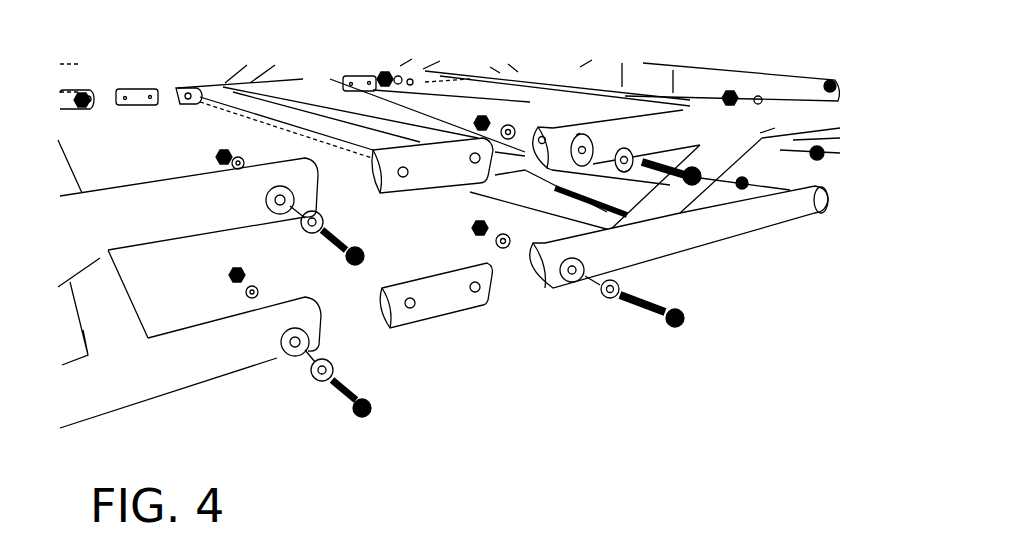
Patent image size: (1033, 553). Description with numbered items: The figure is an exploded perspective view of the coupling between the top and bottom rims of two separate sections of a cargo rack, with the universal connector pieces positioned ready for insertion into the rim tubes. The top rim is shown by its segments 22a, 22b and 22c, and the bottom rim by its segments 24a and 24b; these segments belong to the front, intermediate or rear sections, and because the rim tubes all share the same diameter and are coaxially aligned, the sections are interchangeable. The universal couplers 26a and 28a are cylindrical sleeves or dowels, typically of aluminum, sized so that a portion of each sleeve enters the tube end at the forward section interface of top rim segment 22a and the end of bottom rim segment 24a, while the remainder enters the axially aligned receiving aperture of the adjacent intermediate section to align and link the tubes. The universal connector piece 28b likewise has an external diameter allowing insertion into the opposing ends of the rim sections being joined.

The top rim segment 22a is at (184, 180).
The top rim segment 22b is at (779, 115).
The top rim segment 22c is at (710, 68).
The bottom rim segment 24a is at (228, 377).
The bottom rim segment 24b is at (707, 238).
The universal coupler sleeve 26a is at (430, 200).
The universal connector piece 28a is at (445, 317).
The universal connector piece 28b is at (130, 92).